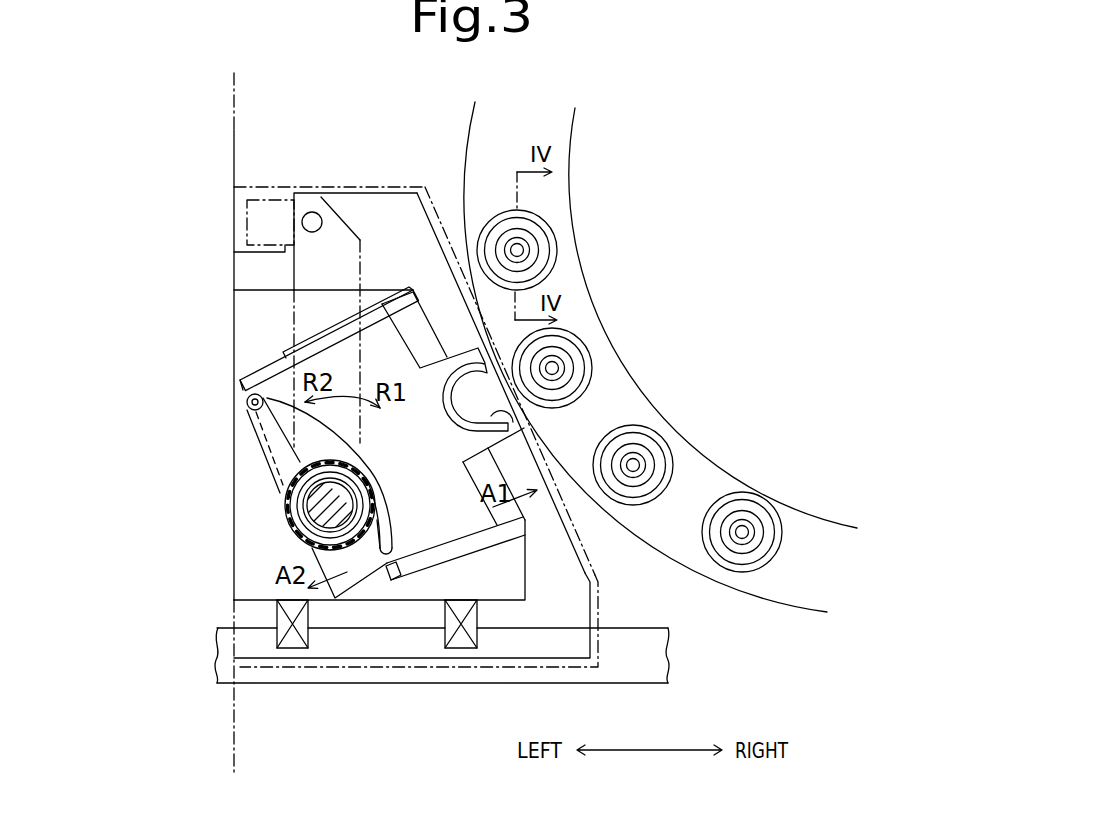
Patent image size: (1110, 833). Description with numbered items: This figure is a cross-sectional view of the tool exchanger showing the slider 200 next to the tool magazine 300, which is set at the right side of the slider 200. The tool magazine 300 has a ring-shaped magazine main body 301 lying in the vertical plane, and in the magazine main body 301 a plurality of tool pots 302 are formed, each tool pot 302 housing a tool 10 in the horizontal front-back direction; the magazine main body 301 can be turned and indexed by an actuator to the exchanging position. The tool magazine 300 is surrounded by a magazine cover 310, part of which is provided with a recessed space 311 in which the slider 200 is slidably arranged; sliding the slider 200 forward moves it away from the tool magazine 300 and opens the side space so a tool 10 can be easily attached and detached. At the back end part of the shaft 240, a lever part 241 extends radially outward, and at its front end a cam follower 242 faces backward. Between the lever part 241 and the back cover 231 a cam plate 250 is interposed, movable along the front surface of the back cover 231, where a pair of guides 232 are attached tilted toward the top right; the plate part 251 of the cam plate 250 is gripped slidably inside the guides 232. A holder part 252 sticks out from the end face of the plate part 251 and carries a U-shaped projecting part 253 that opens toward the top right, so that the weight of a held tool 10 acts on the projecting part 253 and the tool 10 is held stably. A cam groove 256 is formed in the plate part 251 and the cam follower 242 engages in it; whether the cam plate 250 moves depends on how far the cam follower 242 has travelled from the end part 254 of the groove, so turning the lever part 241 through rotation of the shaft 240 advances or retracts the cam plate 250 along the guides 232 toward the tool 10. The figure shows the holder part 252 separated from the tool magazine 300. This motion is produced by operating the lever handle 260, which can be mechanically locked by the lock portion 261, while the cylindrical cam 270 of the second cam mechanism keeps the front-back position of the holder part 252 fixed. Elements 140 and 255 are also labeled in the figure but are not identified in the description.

The tool 10 is at (568, 358).
The shaft 140 is at (313, 510).
The slider 200 is at (173, 289).
The back cover 231 is at (507, 587).
The guides 232 is at (435, 215).
The shaft 240 is at (290, 540).
The lever part 241 is at (262, 448).
The cam follower 242 is at (246, 407).
The cam plate 250 is at (282, 373).
The plate part 251 is at (382, 350).
The holder part 252 is at (470, 360).
The U-shaped projecting part 253 is at (622, 422).
The end part of the cam groove 254 is at (240, 390).
The lower plate 255 is at (400, 572).
The cam groove 256 is at (381, 522).
The lever handle 260 is at (305, 268).
The lock portion 261 is at (247, 210).
The cylindrical cam 270 is at (300, 478).
The tool magazine 300 is at (558, 99).
The magazine main body 301 is at (572, 280).
The tool pots 302 is at (592, 372).
The magazine cover 310 is at (253, 745).
The recessed space 311 is at (250, 614).